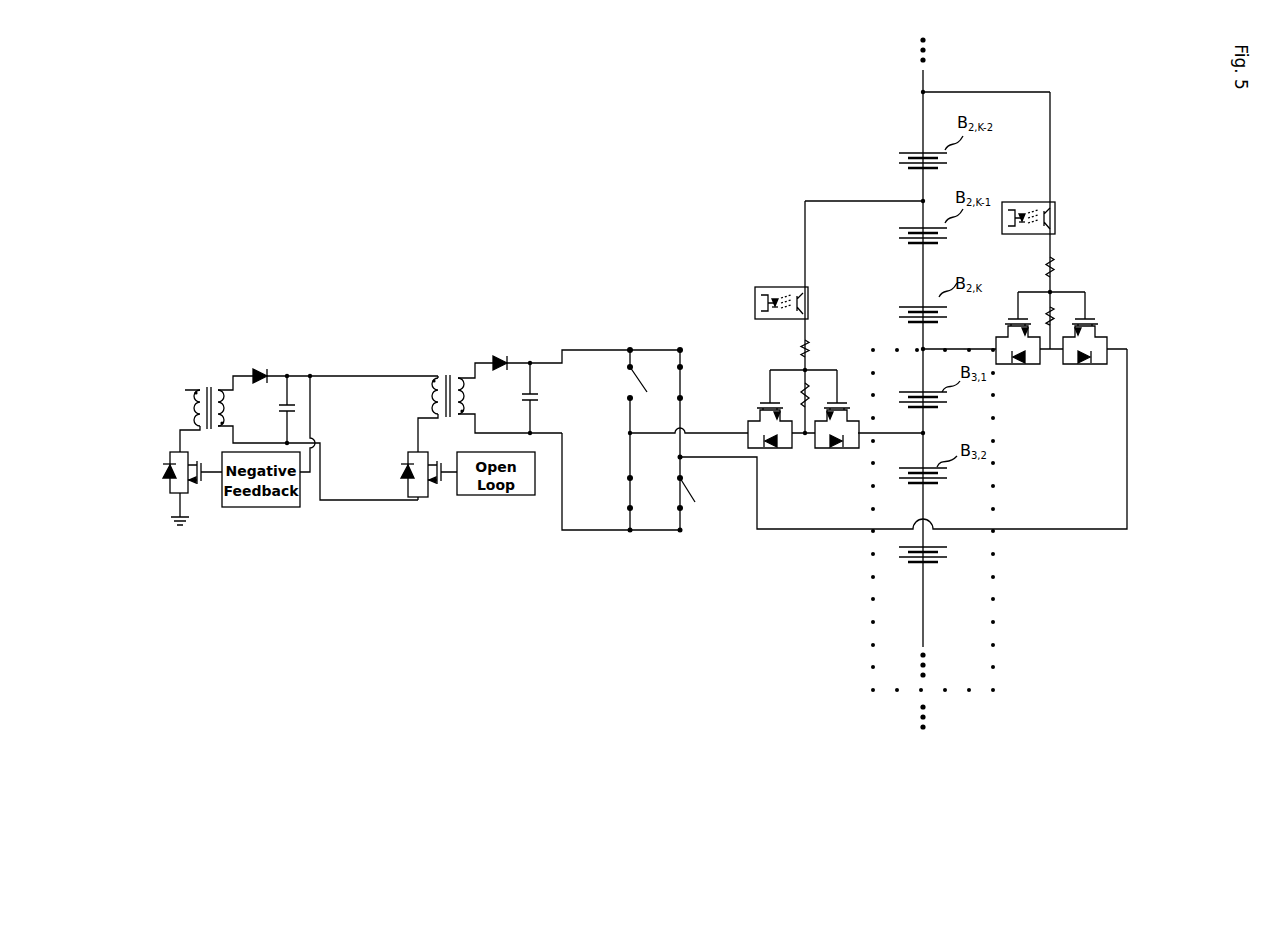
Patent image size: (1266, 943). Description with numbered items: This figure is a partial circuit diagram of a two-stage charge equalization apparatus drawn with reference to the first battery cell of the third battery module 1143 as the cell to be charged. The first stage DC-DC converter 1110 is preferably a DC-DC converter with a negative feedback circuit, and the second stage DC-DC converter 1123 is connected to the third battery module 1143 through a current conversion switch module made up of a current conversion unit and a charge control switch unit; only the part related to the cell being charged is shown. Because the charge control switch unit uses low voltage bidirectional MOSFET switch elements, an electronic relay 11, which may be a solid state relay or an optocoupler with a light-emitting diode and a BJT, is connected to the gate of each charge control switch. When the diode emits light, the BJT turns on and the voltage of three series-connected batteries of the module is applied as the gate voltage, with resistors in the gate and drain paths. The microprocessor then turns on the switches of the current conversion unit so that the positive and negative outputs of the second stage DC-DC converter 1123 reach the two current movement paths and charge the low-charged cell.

The first stage DC-DC converter 1110 is at (208, 386).
The second stage DC-DC converter 1123 is at (440, 374).
The electronic relay 11 is at (752, 303).
The third battery module 1143 is at (1003, 620).